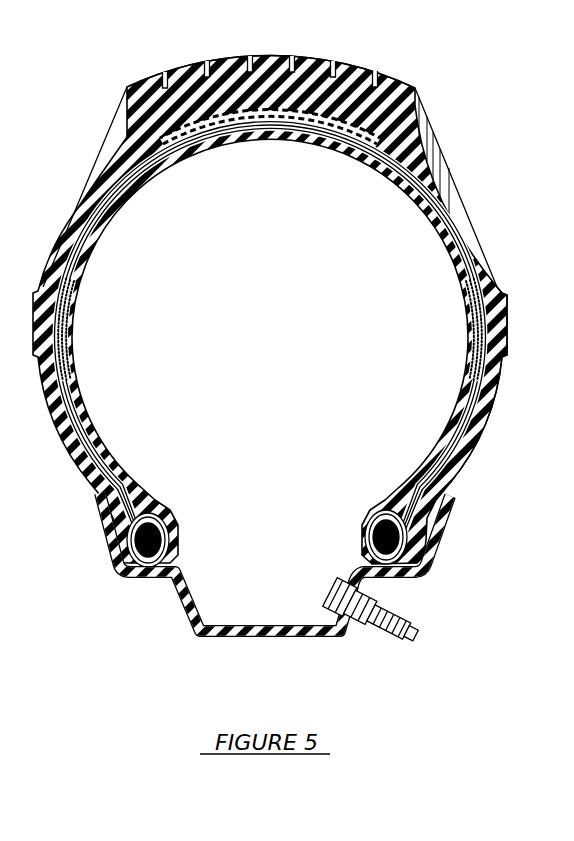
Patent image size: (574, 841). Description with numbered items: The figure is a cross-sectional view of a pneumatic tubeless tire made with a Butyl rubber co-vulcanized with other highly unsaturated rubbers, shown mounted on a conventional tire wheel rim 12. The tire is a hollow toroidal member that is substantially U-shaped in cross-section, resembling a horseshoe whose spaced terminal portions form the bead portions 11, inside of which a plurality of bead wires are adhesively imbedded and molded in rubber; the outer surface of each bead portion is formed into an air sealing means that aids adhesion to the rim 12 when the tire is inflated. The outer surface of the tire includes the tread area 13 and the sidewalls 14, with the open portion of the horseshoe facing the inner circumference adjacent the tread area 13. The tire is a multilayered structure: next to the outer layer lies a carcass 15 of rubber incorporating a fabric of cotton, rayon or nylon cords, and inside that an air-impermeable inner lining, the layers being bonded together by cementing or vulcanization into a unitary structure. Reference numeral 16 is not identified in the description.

The bead portions 11 is at (163, 528).
The rim 12 is at (307, 640).
The tread area 13 is at (354, 66).
The sidewalls 14 is at (496, 393).
The carcass 15 is at (471, 331).
The carcass ply 16 is at (77, 418).